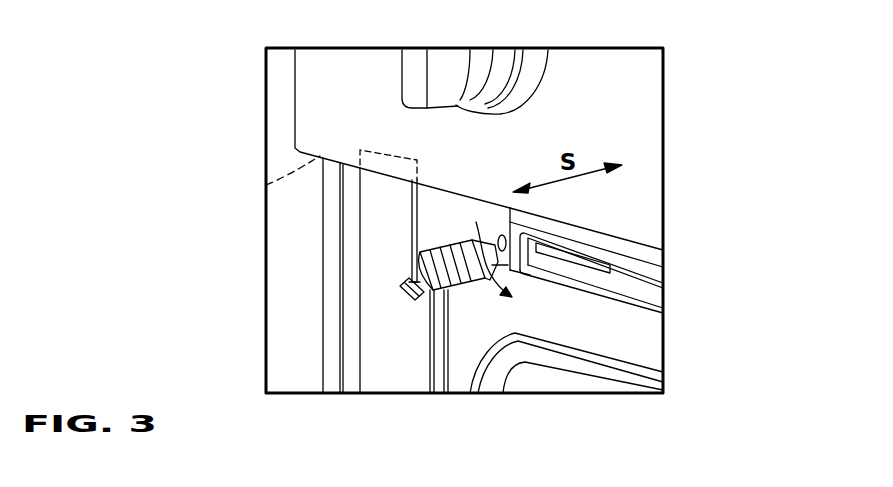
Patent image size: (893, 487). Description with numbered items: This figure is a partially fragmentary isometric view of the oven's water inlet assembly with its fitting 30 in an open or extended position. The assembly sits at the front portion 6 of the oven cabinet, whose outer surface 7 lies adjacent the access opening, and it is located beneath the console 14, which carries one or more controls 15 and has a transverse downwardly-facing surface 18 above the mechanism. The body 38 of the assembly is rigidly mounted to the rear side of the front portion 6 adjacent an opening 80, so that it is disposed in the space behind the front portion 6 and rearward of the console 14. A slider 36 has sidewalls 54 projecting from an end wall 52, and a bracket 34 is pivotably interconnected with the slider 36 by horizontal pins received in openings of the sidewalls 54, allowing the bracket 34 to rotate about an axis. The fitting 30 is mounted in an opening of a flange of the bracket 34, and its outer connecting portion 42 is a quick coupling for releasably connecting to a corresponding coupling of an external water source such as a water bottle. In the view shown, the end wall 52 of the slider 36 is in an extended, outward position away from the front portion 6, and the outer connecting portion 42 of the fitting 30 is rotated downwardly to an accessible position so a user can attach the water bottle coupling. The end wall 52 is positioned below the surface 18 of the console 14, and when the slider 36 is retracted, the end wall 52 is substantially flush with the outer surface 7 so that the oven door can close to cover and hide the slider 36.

The front portion 6 is at (645, 347).
The surface 7 is at (640, 322).
The console 14 is at (617, 90).
The controls 15 is at (445, 67).
The transverse downwardly-facing surface 18 is at (266, 185).
The fitting 30 is at (455, 295).
The bracket 34 is at (460, 292).
The slider 36 is at (385, 205).
The body 38 is at (575, 262).
The outer connecting portion 42 is at (410, 297).
The end wall 52 is at (388, 257).
The sidewalls 54 is at (437, 226).
The opening 80 is at (553, 222).